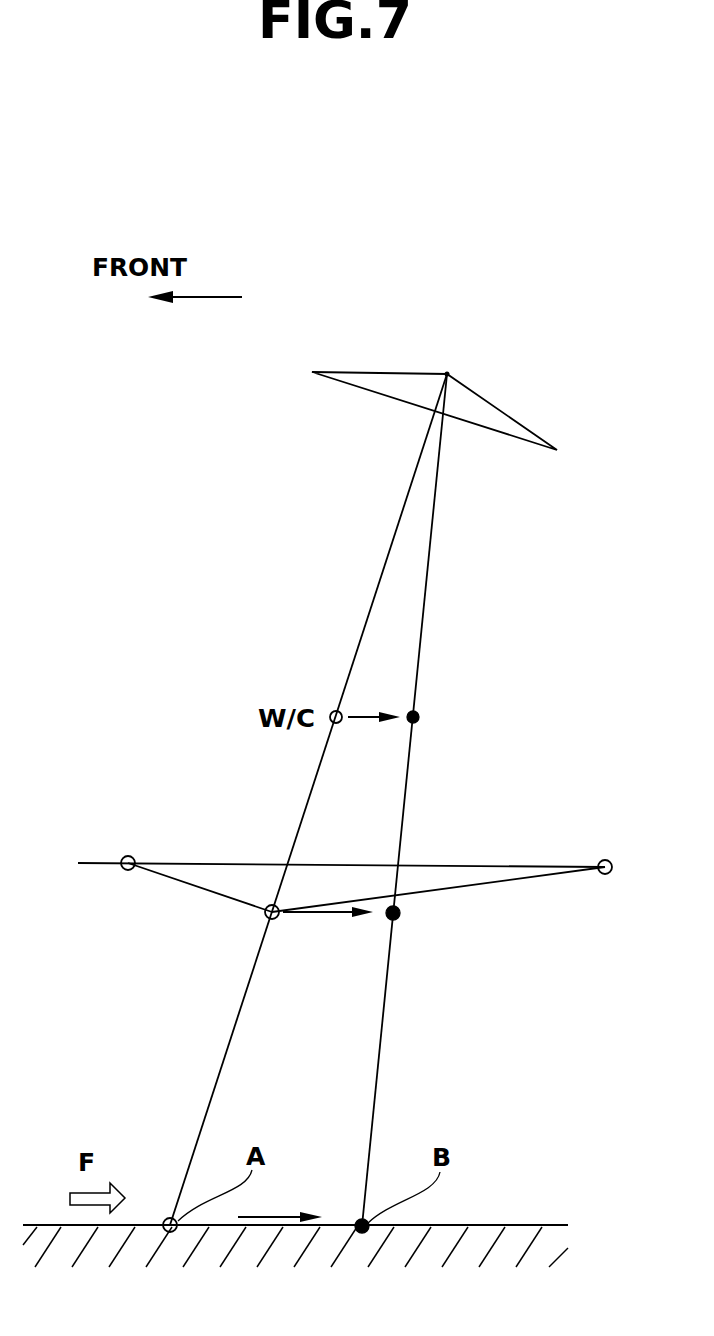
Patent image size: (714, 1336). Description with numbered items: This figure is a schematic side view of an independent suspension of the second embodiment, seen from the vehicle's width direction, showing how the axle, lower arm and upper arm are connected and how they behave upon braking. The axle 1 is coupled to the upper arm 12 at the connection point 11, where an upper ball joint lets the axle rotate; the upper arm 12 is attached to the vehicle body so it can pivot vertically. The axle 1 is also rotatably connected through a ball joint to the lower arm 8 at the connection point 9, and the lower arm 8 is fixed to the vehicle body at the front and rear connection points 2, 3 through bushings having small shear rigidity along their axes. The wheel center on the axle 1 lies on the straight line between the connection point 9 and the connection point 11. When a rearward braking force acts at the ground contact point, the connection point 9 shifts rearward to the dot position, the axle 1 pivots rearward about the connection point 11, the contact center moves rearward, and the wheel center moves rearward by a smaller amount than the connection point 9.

The axle 1 is at (363, 645).
The front connection point 2 is at (128, 856).
The rear connection point 3 is at (606, 860).
The lower arm 8 is at (485, 906).
The connection point 9 is at (265, 917).
The connection point 11 is at (447, 373).
The upper arm 12 is at (370, 352).